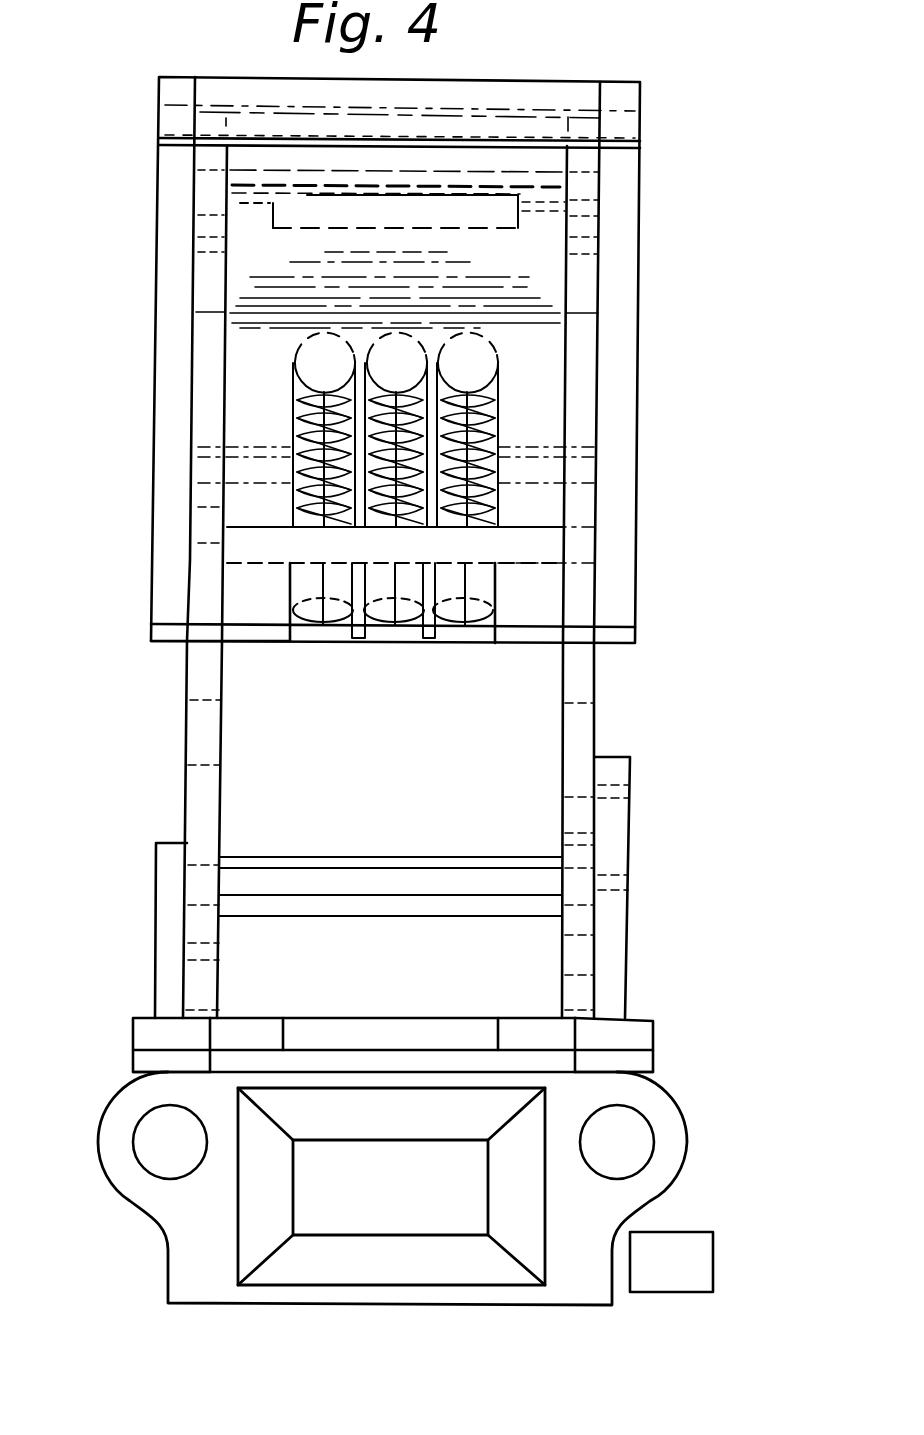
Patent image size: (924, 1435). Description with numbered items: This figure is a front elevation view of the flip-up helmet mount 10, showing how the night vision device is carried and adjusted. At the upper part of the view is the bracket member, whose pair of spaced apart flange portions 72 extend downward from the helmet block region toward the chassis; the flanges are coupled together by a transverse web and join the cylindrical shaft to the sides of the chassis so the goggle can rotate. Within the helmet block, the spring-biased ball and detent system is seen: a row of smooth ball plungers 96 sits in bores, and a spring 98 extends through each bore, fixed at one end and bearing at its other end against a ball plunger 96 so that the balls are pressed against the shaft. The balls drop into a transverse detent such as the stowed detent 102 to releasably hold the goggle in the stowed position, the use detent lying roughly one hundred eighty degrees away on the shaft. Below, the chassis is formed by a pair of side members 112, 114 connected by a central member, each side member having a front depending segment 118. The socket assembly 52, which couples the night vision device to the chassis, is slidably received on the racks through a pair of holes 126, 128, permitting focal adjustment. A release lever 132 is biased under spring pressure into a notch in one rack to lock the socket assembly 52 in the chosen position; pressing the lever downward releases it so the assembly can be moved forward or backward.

The flip-up helmet mount 10 is at (650, 795).
The socket assembly 52 is at (198, 1248).
The flange portions 72 is at (188, 698).
The spring-biased ball plungers 96 is at (497, 357).
The spring 98 is at (498, 442).
The stowed detent 102 is at (520, 212).
The side member 112 is at (640, 1035).
The side member 114 is at (150, 1035).
The front depending segment 118 is at (142, 1058).
The hole 126 is at (157, 1160).
The hole 128 is at (627, 1142).
The release lever 132 is at (703, 1248).